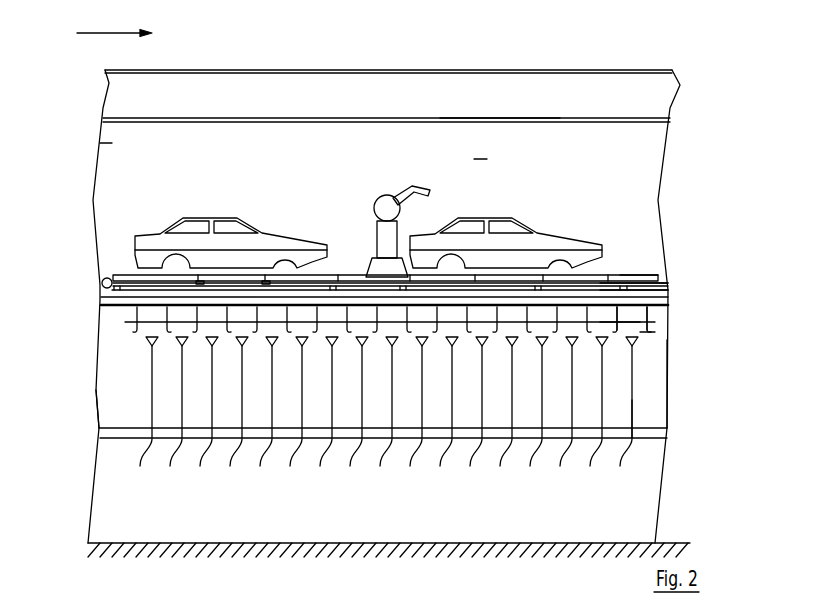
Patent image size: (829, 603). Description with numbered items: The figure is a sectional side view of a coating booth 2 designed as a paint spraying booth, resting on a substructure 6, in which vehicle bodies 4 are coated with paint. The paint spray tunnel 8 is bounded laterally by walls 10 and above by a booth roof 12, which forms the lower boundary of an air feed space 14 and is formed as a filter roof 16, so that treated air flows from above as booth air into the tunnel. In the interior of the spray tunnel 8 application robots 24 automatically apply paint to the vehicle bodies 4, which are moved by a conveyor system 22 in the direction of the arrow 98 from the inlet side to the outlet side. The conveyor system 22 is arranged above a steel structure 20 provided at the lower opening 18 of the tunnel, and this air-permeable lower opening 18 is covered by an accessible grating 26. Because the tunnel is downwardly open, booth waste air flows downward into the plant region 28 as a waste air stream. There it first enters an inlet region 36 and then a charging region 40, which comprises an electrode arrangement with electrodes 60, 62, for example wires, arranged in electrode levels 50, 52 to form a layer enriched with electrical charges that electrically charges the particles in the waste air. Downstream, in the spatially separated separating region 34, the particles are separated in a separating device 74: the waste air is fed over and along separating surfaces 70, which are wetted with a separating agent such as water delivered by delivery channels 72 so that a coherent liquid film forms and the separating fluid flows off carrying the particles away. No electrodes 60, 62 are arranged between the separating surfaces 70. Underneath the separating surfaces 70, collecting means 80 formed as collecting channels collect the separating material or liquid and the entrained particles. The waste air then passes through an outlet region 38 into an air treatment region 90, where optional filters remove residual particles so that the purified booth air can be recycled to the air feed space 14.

The coating booth 2 is at (710, 128).
The arrow 98 is at (90, 34).
The walls 10 is at (100, 143).
The air feed space 14 is at (298, 92).
The filter roof 16 is at (397, 118).
The booth roof 12 is at (478, 112).
The paint spray tunnel 8 is at (480, 151).
The vehicle bodies 4 is at (210, 215).
The application robots 24 is at (380, 190).
The grating 26 is at (348, 293).
The conveyor system 22 is at (121, 269).
The lower opening 18 is at (106, 279).
The steel structure 20 is at (676, 281).
The substructure 6 is at (676, 291).
The inlet region 36 is at (94, 303).
The charging region 40 is at (94, 316).
The electrodes 60 is at (627, 318).
The electrode level 50 is at (664, 322).
The electrode level 52 is at (662, 332).
The electrodes 62 is at (698, 362).
The delivery channels 72 is at (634, 345).
The separating surfaces 70 is at (632, 392).
The collecting means 80 is at (382, 464).
The separating region 34 is at (75, 366).
The separating device 74 is at (652, 408).
The plant region 28 is at (748, 370).
The outlet region 38 is at (93, 433).
The air treatment region 90 is at (75, 500).